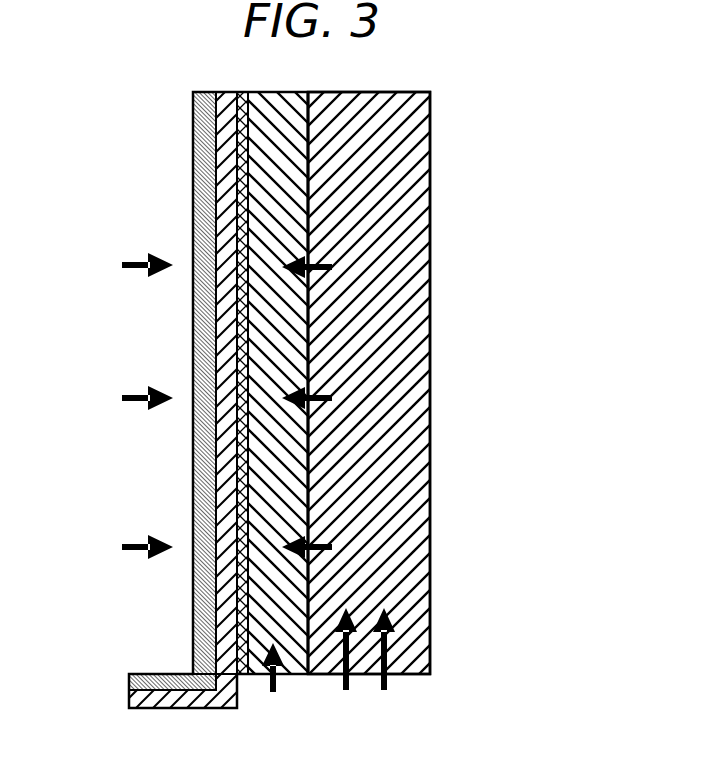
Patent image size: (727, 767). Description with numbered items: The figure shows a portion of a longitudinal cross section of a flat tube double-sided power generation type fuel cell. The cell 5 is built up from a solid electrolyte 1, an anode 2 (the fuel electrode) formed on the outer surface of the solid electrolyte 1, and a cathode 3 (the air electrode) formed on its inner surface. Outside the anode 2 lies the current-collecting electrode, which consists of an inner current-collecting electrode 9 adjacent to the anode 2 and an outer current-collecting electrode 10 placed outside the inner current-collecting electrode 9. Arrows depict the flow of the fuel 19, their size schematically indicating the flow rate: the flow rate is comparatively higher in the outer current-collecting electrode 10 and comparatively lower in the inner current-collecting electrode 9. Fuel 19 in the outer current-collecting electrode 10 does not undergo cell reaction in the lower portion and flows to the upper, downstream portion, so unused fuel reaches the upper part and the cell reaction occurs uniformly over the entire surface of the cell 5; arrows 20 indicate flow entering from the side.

The solid electrolyte 1 is at (227, 172).
The anode 2 is at (203, 205).
The cathode 3 is at (247, 130).
The cell 5 is at (103, 108).
The inner current-collecting electrode 9 is at (280, 210).
The outer current-collecting electrode 10 is at (387, 318).
The fuel 19 is at (328, 666).
The incident light 20 is at (130, 406).